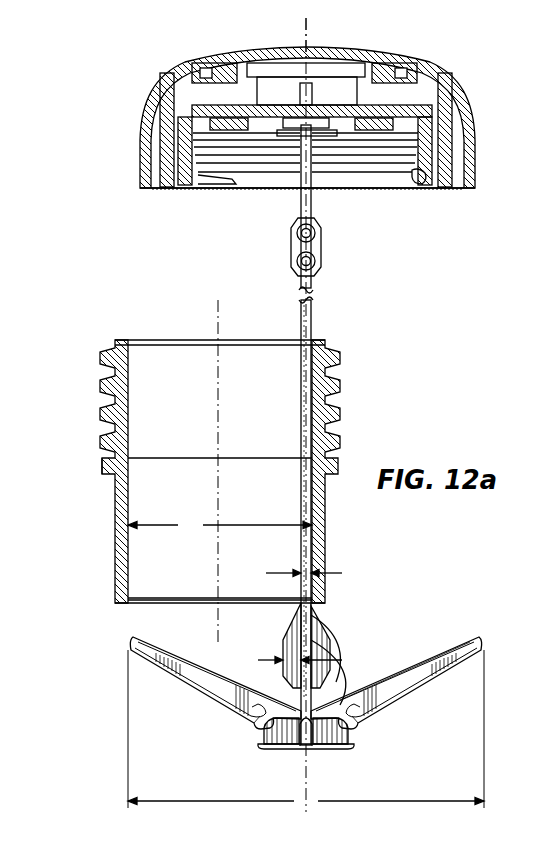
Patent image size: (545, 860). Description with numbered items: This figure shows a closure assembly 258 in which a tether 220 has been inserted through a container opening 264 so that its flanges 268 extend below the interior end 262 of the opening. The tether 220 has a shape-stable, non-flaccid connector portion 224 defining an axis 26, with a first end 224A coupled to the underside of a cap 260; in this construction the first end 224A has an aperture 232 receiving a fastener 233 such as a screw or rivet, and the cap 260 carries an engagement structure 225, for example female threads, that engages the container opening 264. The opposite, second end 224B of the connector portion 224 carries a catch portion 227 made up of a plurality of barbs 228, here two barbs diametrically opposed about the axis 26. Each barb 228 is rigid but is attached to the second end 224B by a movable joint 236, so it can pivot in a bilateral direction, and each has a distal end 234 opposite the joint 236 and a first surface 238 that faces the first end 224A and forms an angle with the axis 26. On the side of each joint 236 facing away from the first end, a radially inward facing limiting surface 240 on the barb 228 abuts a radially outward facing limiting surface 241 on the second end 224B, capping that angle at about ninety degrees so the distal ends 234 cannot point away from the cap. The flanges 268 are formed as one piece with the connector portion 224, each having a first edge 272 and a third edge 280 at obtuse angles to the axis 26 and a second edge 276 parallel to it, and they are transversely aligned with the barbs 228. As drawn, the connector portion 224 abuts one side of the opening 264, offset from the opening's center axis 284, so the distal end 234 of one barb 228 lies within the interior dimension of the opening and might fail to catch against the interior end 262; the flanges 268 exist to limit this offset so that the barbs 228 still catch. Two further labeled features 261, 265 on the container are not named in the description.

The axis 26 is at (304, 37).
The closure assembly 258 is at (325, 128).
The fastener 233 is at (207, 82).
The cap 260 is at (470, 130).
The aperture 232 is at (287, 138).
The engagement structure 225 is at (420, 180).
The first end of the connector portion 224A is at (374, 215).
The container body 261 is at (183, 462).
The axis 284 is at (218, 312).
The connector portion 224 is at (281, 468).
The tether 220 is at (272, 468).
The container opening 264 is at (130, 392).
The container lower lip 265 is at (113, 598).
The interior end of the container opening 262 is at (202, 603).
The first edge 272 is at (314, 624).
The flanges 268 is at (331, 640).
The second edge 276 is at (338, 656).
The third edge 280 is at (338, 700).
The catch portion 227 is at (382, 621).
The first surface 238 is at (434, 642).
The distal end 234 is at (132, 640).
The barbs 228 is at (281, 662).
The limiting surface 240 is at (258, 732).
The limiting surface 241 is at (263, 748).
The movable joint 236 is at (356, 699).
The second end of the connector portion 224B is at (281, 703).